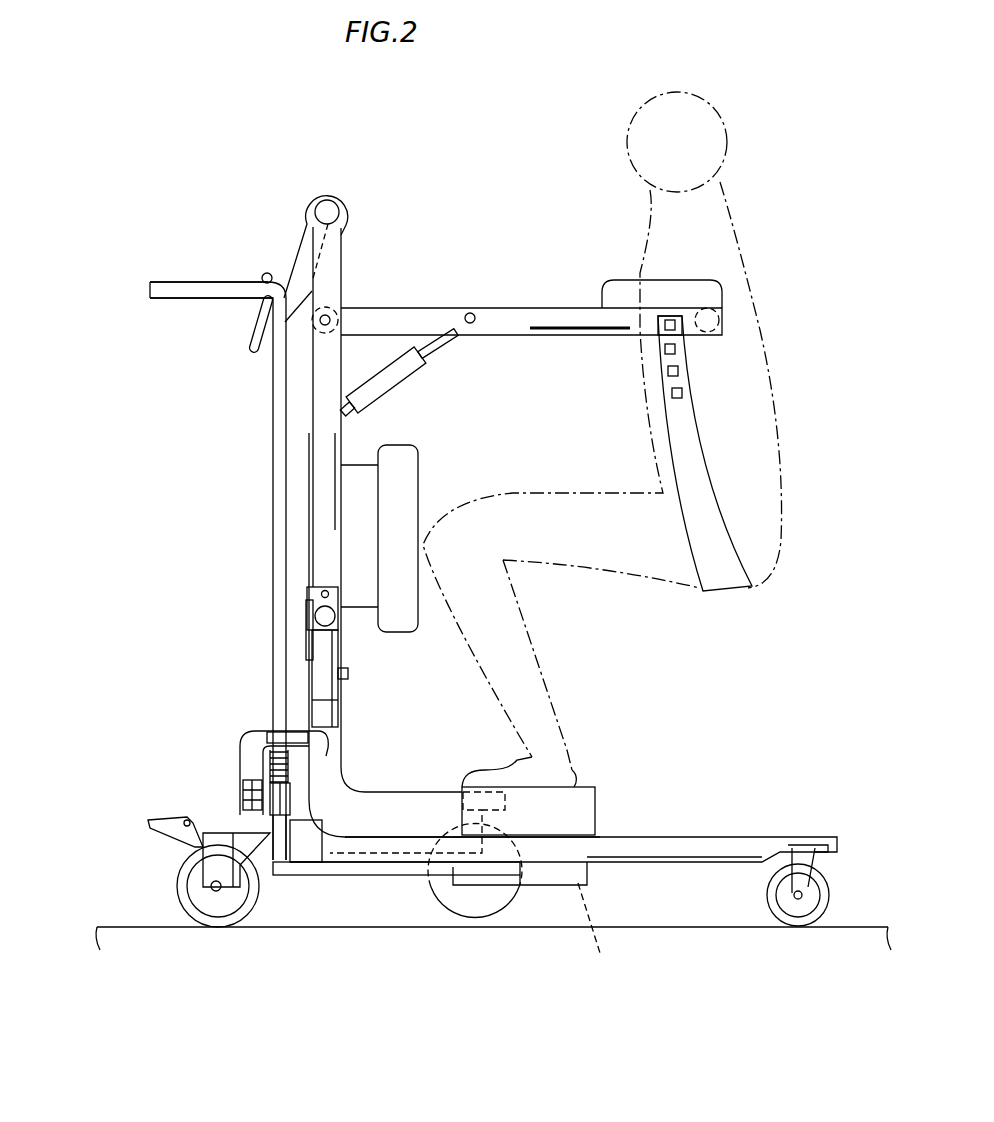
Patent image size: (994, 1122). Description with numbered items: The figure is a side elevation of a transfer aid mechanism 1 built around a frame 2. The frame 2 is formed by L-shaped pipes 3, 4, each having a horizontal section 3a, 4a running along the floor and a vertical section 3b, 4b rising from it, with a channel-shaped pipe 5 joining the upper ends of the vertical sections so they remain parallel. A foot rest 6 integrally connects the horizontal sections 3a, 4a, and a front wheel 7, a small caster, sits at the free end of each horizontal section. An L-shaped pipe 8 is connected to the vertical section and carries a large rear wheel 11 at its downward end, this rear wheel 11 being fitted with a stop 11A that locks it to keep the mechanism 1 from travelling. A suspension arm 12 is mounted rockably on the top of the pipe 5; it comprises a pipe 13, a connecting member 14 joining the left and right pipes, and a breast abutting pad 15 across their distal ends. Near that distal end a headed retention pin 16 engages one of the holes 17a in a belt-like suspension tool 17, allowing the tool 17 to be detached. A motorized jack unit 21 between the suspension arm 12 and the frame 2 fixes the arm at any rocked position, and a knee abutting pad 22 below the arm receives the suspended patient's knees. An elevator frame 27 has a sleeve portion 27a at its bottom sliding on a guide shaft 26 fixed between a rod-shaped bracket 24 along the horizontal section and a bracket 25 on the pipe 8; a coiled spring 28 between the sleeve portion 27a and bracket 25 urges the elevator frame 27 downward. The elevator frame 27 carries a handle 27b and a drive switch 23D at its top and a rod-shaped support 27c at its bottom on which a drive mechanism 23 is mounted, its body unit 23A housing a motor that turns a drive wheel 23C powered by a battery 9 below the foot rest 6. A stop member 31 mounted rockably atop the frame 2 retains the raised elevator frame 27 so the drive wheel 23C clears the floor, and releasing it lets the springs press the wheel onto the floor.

The transfer aid mechanism 1 is at (196, 507).
The frame 2 is at (352, 198).
The stop member 31 is at (333, 192).
The channel-shaped pipe 5 is at (342, 272).
The elevator frame 27 is at (263, 386).
The handle 27b is at (177, 264).
The drive switch 23D is at (239, 254).
The connecting member 14 is at (531, 283).
The suspension arm 12 is at (474, 302).
The pipe 13 is at (571, 361).
The breast abutting pad 15 is at (615, 282).
The suspension tool 17 is at (721, 590).
The retention pin 16 is at (736, 293).
The hole 17a is at (691, 387).
The motorized jack unit 21 is at (400, 372).
The knee abutting pad 22 is at (416, 458).
The vertical section 4b is at (454, 635).
The vertical section 3b is at (330, 767).
The L-shaped pipe 8 is at (236, 750).
The bracket 25 is at (230, 694).
The coiled spring 28 is at (193, 752).
The sleeve portion 27a is at (171, 783).
The guide shaft 26 is at (171, 797).
The support 27c is at (505, 806).
The L-shaped pipe 4 is at (563, 869).
The L-shaped pipe 3 is at (703, 830).
The horizontal section 4a is at (674, 924).
The horizontal section 3a is at (667, 858).
The foot rest 6 is at (592, 787).
The body unit 23A is at (342, 878).
The drive wheel 23C is at (500, 895).
The drive mechanism 23 is at (407, 890).
The bracket 24 is at (472, 934).
The battery 9 is at (594, 935).
The rear wheel 11 is at (230, 911).
The stop 11A is at (121, 845).
The front wheel 7 is at (816, 918).